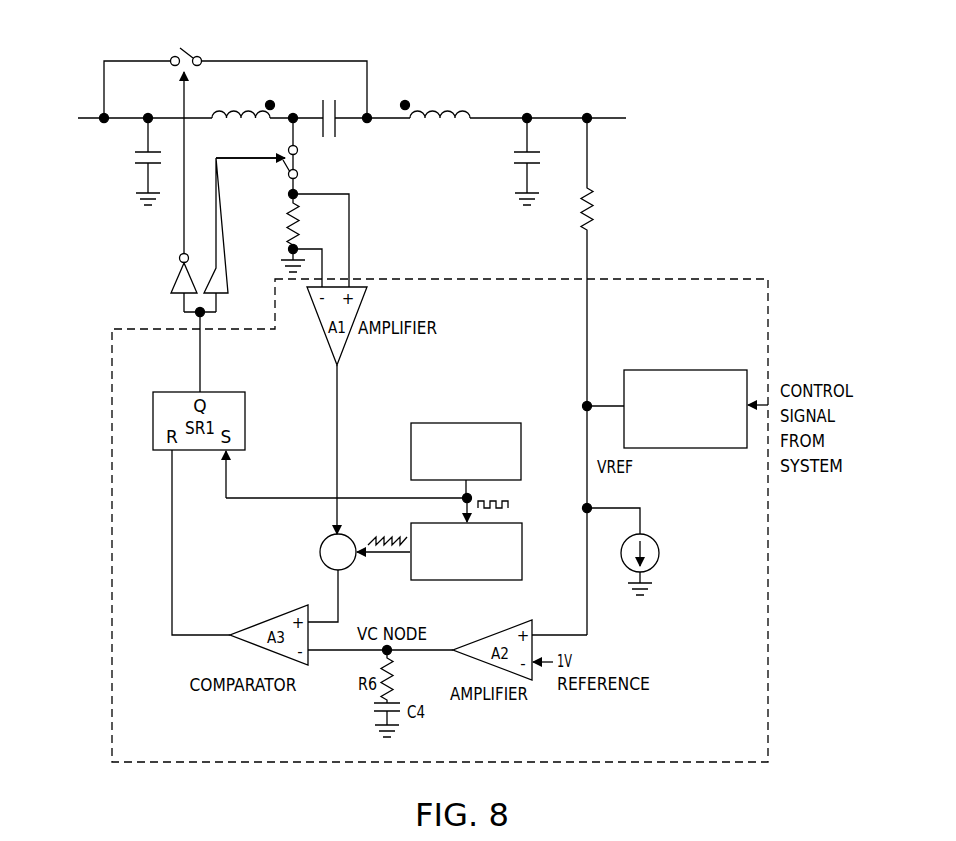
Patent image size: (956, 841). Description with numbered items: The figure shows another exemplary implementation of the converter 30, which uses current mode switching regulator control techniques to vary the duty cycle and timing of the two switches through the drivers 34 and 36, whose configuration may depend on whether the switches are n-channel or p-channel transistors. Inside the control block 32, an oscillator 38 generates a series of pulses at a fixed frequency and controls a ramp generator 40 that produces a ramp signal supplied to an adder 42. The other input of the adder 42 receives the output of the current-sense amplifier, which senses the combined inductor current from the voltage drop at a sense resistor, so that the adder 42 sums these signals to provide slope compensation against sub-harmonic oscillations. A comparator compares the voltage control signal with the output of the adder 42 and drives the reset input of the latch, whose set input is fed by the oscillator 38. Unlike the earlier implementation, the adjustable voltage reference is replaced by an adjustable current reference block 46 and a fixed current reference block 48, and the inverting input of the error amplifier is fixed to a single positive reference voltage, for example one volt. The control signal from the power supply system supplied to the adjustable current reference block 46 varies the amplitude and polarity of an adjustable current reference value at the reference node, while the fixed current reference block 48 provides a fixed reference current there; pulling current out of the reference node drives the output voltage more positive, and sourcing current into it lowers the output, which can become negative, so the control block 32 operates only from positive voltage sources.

The converter 30 is at (598, 58).
The control block 32 is at (770, 547).
The driver 34 is at (228, 273).
The driver 36 is at (172, 280).
The oscillator 38 is at (493, 423).
The ramp generator 40 is at (522, 556).
The adder 42 is at (320, 549).
The adjustable current reference block 46 is at (693, 370).
The fixed current reference block 48 is at (648, 534).